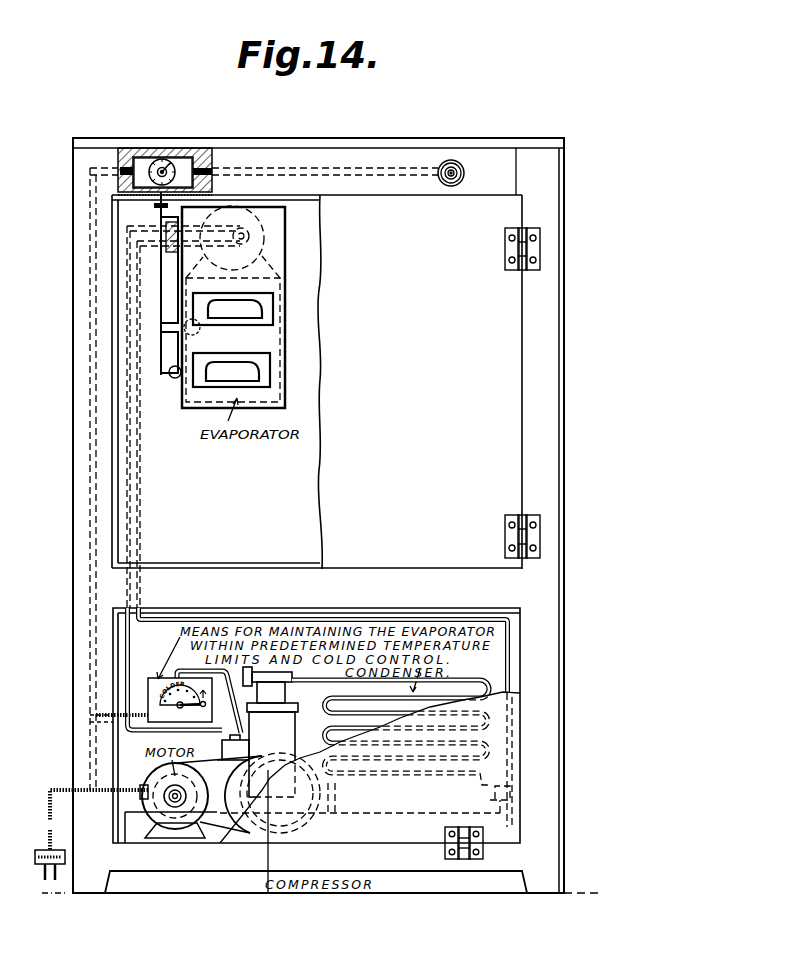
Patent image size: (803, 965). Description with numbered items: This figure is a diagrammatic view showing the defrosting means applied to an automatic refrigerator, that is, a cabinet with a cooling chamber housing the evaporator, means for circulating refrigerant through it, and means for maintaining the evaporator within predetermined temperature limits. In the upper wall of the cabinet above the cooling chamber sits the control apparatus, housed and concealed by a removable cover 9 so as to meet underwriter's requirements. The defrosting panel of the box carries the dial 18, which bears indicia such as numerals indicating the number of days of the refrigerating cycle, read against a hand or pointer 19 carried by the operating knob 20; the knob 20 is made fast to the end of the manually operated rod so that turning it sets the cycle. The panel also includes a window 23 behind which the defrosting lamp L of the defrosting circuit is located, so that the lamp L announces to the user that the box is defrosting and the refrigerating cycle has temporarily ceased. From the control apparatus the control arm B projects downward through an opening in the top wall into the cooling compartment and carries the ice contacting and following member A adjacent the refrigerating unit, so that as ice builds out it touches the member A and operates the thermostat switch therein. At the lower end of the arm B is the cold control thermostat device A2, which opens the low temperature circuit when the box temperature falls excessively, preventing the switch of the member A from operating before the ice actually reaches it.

The cover 9 is at (140, 177).
The dial 18 is at (147, 165).
The hand or pointer 19 is at (183, 162).
The operating knob 20 is at (163, 170).
The window 23 is at (453, 163).
The defrosting lamp L is at (445, 183).
The control arm B is at (163, 282).
The ice contacting and following member A is at (200, 331).
The cold control thermostat device A2 is at (175, 379).